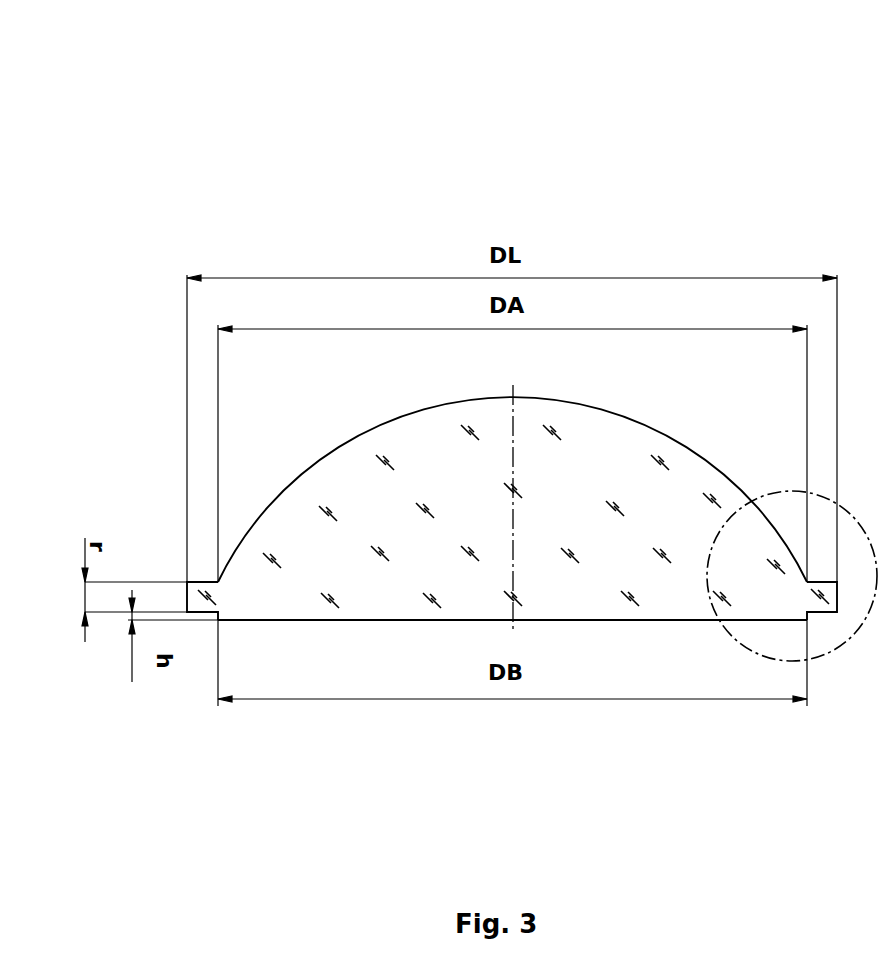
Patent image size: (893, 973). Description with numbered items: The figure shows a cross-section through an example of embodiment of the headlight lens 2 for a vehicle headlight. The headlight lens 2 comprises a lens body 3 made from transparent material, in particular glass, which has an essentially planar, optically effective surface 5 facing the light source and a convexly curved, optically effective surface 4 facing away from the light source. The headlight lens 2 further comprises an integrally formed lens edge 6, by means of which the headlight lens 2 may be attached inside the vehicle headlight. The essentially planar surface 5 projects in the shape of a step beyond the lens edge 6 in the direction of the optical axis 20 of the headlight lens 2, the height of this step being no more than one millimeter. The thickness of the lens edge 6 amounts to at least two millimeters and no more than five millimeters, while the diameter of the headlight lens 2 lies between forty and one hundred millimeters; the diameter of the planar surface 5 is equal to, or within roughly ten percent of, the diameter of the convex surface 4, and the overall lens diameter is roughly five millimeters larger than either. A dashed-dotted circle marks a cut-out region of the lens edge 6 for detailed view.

The headlight lens 2 is at (469, 413).
The lens body 3 is at (469, 561).
The convexly curved, optically effective surface 4 is at (327, 456).
The essentially planar, optically effective surface 5 is at (331, 620).
The lens edge 6 is at (207, 597).
The optical axis 20 is at (513, 517).